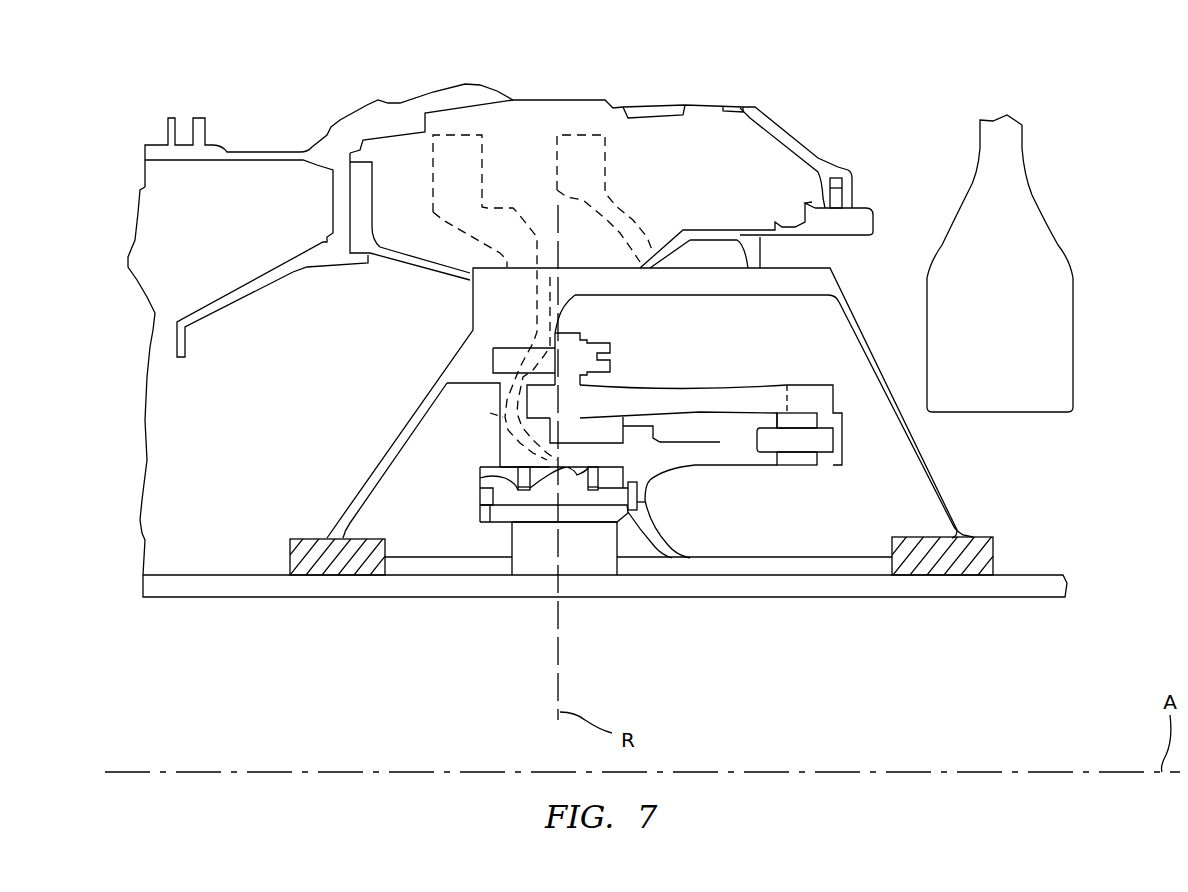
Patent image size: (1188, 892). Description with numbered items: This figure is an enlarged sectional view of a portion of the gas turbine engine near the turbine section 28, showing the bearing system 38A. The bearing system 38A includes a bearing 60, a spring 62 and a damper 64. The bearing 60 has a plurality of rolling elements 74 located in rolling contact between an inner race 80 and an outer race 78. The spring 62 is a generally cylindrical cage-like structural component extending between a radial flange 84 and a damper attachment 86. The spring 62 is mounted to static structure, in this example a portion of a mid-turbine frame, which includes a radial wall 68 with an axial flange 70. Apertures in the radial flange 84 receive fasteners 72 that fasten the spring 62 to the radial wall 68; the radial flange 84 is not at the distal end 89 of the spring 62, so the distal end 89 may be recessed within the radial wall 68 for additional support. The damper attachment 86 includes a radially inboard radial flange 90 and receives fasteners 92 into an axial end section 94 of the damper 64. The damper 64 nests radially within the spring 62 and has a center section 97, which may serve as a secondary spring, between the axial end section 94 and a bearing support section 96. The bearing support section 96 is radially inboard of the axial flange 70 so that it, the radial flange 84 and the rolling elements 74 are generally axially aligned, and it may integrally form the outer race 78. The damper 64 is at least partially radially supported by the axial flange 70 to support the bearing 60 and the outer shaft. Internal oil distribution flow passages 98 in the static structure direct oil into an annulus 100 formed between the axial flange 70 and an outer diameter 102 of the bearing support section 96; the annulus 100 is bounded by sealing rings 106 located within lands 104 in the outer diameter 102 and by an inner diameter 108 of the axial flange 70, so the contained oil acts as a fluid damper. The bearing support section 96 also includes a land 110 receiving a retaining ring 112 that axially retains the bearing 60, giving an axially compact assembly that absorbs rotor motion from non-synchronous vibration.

The bearing system 38A is at (871, 127).
The turbine section 28 is at (1079, 177).
The inner race 80 is at (597, 597).
The bearing 60 is at (655, 520).
The radial flange 84 is at (570, 332).
The fasteners 72 is at (590, 333).
The distal end 89 is at (540, 398).
The spring 62 is at (822, 373).
The outer diameter 102 is at (588, 466).
The damper attachment 86 is at (813, 400).
The radial flange 90 is at (830, 420).
The fasteners 92 is at (842, 443).
The axial end section 94 is at (803, 465).
The sealing rings 106 is at (625, 450).
The damper 64 is at (760, 463).
The center section 97 is at (672, 466).
The lands 104 is at (618, 524).
The retaining ring 112 is at (645, 524).
The land 110 is at (652, 483).
The radial wall 68 is at (500, 421).
The axial flange 70 is at (517, 457).
The oil distribution flow passages 98 is at (490, 413).
The annulus 100 is at (513, 477).
The inner diameter 108 is at (580, 466).
The bearing support section 96 is at (483, 484).
The outer race 78 is at (507, 519).
The rolling elements 74 is at (545, 563).